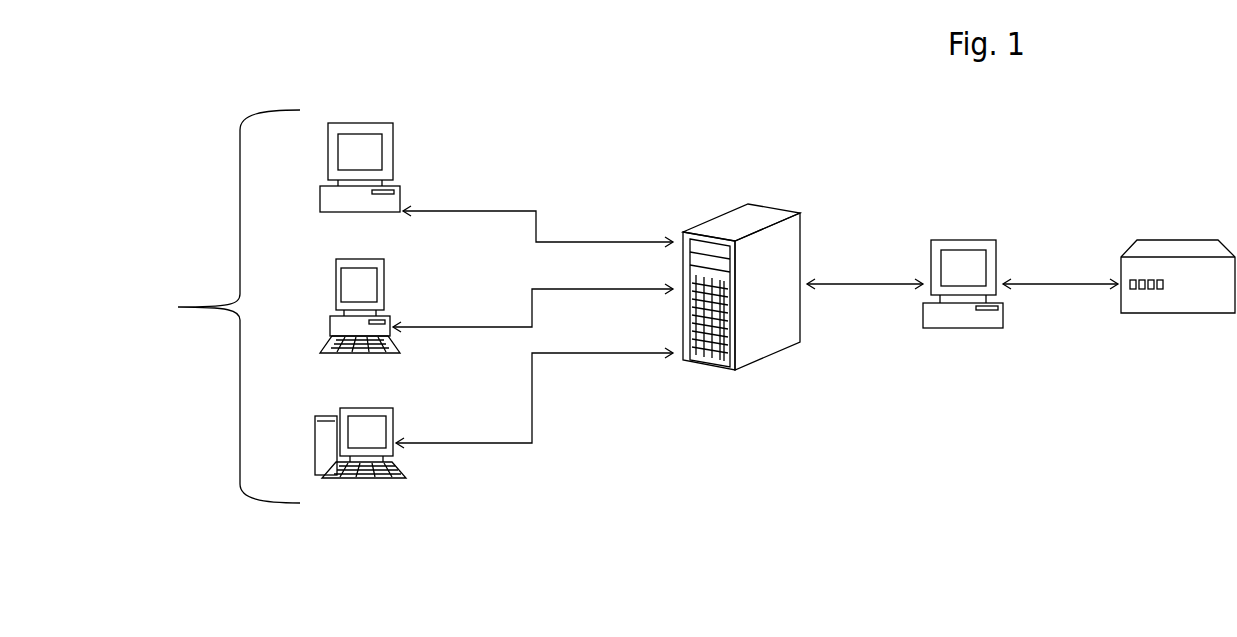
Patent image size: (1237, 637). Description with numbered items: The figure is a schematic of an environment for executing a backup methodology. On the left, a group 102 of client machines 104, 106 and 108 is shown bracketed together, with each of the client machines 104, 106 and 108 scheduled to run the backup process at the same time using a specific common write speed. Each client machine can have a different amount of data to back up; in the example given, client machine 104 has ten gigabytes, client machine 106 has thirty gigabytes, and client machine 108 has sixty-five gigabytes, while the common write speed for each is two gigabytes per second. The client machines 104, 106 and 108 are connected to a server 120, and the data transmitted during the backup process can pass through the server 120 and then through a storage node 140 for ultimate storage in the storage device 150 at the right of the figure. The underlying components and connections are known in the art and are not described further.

The group 102 is at (223, 306).
The client machine 104 is at (407, 167).
The client machine 106 is at (407, 317).
The client machine 108 is at (399, 443).
The server 120 is at (690, 197).
The storage node 140 is at (930, 215).
The storage device 150 is at (1142, 208).